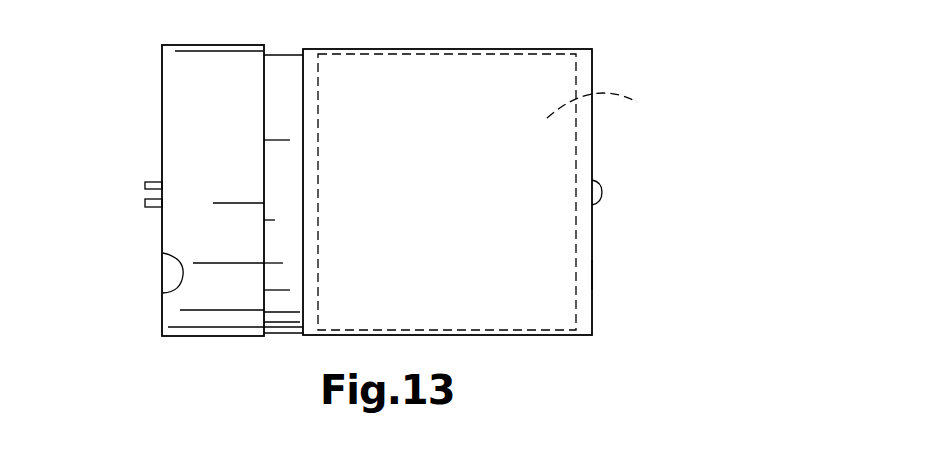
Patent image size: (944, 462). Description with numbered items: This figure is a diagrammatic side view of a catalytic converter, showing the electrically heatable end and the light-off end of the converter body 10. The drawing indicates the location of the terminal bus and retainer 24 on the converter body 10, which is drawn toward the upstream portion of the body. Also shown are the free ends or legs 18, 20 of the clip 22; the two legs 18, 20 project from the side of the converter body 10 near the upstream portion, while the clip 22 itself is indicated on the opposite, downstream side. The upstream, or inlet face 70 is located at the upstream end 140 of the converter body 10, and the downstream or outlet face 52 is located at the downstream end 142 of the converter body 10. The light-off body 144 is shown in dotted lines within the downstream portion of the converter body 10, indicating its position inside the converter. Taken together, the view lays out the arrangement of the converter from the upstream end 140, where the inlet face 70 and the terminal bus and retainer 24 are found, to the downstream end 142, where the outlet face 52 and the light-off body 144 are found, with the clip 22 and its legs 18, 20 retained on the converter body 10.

The upstream end 140 is at (141, 115).
The terminal bus and retainer 24 is at (228, 62).
The converter body 10 is at (400, 34).
The downstream end 142 is at (606, 56).
The light-off body 144 is at (613, 105).
The clip 22 is at (601, 197).
The outlet face 52 is at (592, 275).
The leg 20 is at (147, 185).
The leg 18 is at (148, 206).
The inlet face 70 is at (163, 292).